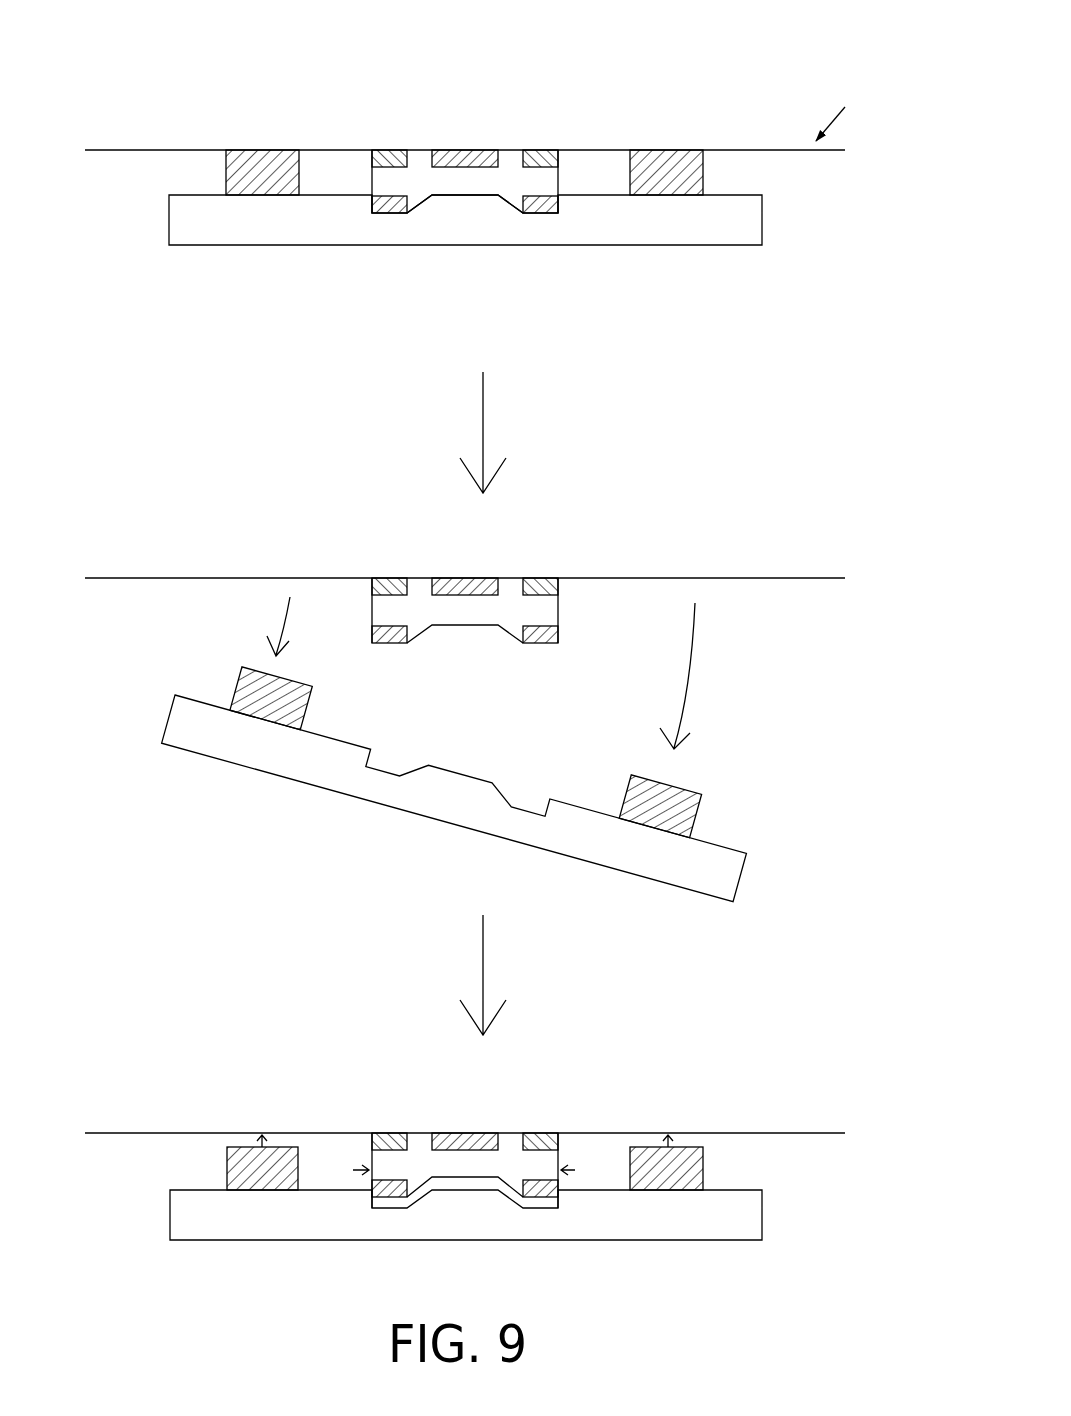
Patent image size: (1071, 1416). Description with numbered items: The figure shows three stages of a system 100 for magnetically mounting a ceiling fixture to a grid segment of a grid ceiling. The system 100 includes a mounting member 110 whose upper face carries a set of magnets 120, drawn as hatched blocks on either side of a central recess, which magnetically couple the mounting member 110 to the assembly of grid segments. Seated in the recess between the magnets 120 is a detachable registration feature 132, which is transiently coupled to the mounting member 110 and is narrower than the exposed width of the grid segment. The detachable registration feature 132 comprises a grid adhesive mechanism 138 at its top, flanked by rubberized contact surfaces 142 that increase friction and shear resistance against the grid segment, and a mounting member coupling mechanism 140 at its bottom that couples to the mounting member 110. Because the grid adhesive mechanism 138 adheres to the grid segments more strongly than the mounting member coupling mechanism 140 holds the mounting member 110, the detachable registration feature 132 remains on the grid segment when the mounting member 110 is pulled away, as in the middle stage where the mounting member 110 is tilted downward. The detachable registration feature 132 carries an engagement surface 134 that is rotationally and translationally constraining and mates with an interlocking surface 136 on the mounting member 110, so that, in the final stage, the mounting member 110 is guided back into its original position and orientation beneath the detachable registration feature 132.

The system 100 is at (80, 84).
The mounting member 110 is at (772, 230).
The set of magnets 120 is at (195, 170).
The detachable registration feature 132 is at (562, 173).
The engagement surface 134 is at (489, 635).
The interlocking surface 136 is at (466, 200).
The grid adhesive mechanism 138 is at (468, 150).
The mounting member coupling mechanism 140 is at (553, 220).
The rubberized contact surface 142 is at (383, 148).